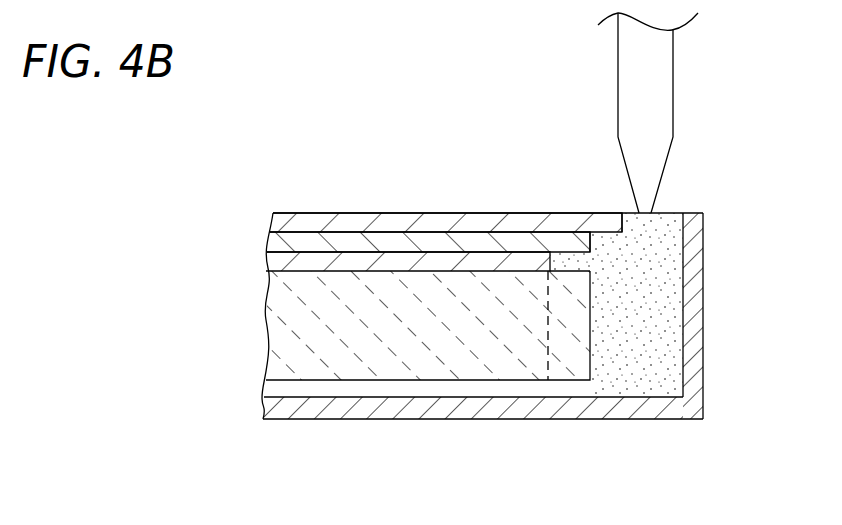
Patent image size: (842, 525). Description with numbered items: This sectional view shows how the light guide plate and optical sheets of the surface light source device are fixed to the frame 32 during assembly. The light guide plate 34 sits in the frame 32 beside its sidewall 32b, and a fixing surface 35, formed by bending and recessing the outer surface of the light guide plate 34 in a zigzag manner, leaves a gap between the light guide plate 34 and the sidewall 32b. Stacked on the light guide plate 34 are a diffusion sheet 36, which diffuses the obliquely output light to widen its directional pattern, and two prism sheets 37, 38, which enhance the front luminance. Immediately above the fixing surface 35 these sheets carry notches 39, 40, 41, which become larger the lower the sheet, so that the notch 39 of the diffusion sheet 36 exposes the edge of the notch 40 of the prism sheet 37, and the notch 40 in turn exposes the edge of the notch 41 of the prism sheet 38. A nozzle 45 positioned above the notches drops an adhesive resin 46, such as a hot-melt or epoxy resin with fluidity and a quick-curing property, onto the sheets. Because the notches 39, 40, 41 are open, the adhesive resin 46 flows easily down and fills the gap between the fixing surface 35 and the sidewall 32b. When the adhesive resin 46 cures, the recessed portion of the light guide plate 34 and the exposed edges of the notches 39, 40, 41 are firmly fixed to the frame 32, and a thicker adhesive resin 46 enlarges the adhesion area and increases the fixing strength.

The frame 32 is at (423, 410).
The sidewall 32b is at (698, 307).
The light guide plate 34 is at (328, 319).
The fixing surface 35 is at (570, 363).
The diffusion sheet 36 is at (493, 262).
The prism sheet 37 is at (415, 243).
The prism sheet 38 is at (337, 220).
The notch 39 is at (550, 258).
The notch 40 is at (592, 237).
The notch 41 is at (622, 224).
The nozzle 45 is at (650, 85).
The adhesive resin 46 is at (653, 346).